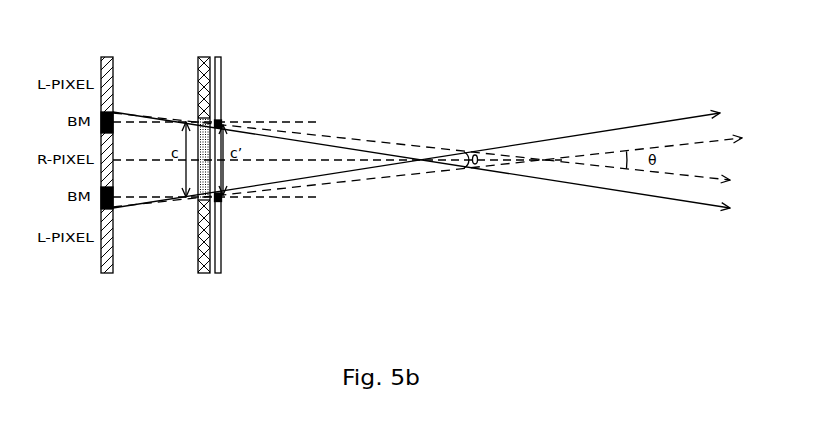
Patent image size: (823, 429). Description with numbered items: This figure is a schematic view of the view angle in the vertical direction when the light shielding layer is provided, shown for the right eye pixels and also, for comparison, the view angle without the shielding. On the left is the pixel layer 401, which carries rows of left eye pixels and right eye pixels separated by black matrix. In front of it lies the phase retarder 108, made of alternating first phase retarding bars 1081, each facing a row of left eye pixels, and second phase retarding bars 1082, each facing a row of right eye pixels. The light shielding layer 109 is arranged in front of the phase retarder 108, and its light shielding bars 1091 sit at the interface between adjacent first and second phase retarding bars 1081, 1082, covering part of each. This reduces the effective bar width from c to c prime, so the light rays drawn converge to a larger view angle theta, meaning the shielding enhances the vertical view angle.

The pixel layer 401 is at (107, 275).
The phase retarder 108 is at (203, 275).
The first phase retarding bar 1081 is at (202, 85).
The second phase retarding bar 1082 is at (202, 167).
The light shielding layer 109 is at (218, 275).
The light shielding bar 1091 is at (222, 207).